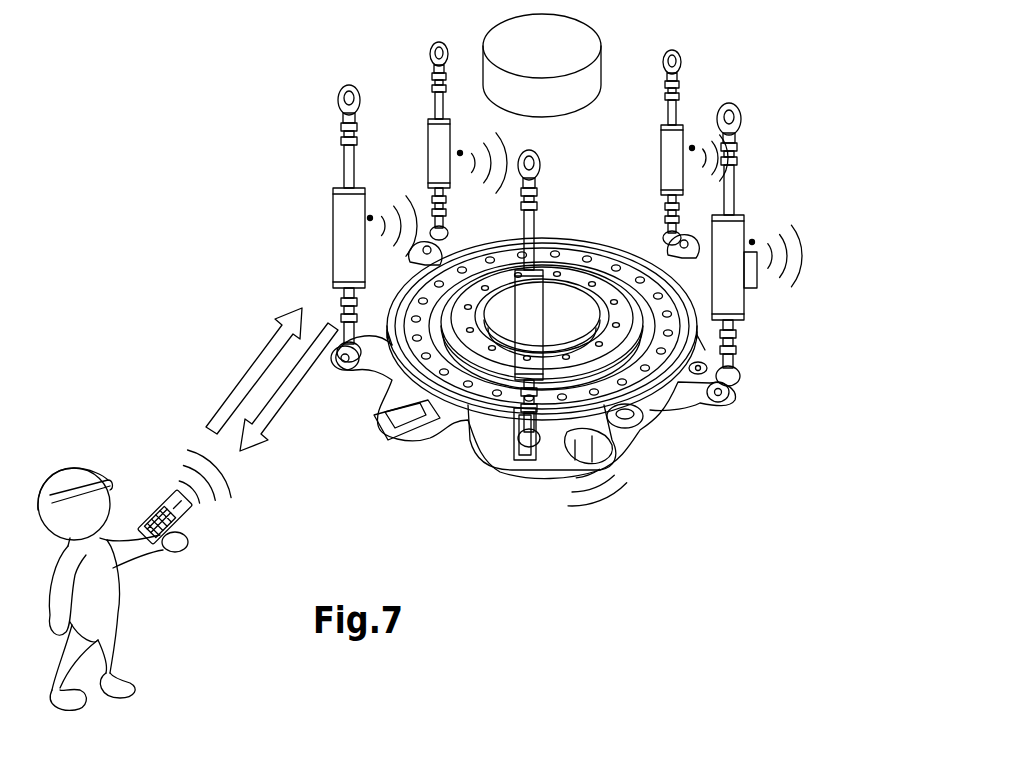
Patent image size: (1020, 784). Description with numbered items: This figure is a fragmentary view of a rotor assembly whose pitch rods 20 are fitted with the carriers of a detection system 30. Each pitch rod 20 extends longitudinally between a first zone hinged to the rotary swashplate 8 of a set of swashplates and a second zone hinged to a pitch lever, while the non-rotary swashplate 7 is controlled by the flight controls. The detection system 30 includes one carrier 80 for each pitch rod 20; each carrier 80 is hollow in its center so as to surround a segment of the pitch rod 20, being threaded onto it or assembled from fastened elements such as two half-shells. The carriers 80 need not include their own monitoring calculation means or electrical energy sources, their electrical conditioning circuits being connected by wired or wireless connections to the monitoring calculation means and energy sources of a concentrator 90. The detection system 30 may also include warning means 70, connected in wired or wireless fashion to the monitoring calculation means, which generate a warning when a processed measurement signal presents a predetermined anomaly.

The non-rotary swashplate 7 is at (490, 378).
The rotary swashplate 8 is at (687, 388).
The pitch rod 20 is at (800, 208).
The detection system 30 is at (232, 263).
The warning means 70 is at (176, 506).
The carrier 80 is at (345, 208).
The concentrator 90 is at (559, 60).